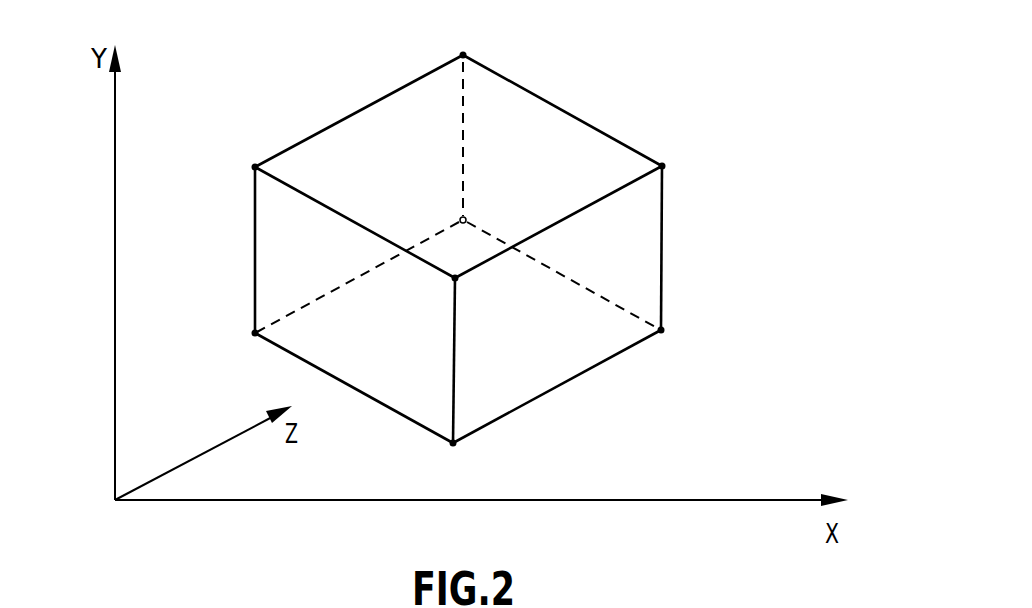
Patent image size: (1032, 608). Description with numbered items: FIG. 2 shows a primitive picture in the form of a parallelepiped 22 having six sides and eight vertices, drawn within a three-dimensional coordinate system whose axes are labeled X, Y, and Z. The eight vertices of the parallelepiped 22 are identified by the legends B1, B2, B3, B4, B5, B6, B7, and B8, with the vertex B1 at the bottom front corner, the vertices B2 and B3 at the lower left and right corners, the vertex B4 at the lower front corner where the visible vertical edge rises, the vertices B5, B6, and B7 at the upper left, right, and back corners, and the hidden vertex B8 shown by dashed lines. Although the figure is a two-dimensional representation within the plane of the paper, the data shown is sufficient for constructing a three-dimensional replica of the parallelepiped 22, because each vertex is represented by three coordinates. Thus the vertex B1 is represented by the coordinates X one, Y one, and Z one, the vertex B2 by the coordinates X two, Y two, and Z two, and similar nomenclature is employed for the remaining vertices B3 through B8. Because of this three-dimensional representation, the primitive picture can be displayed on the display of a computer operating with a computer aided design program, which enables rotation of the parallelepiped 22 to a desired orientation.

The parallelepiped 22 is at (553, 96).
The vertex B1 is at (455, 446).
The vertex B2 is at (254, 331).
The vertex B3 is at (662, 332).
The vertex B4 is at (456, 280).
The vertex B5 is at (255, 166).
The vertex B6 is at (662, 165).
The vertex B7 is at (464, 54).
The vertex B8 is at (459, 217).